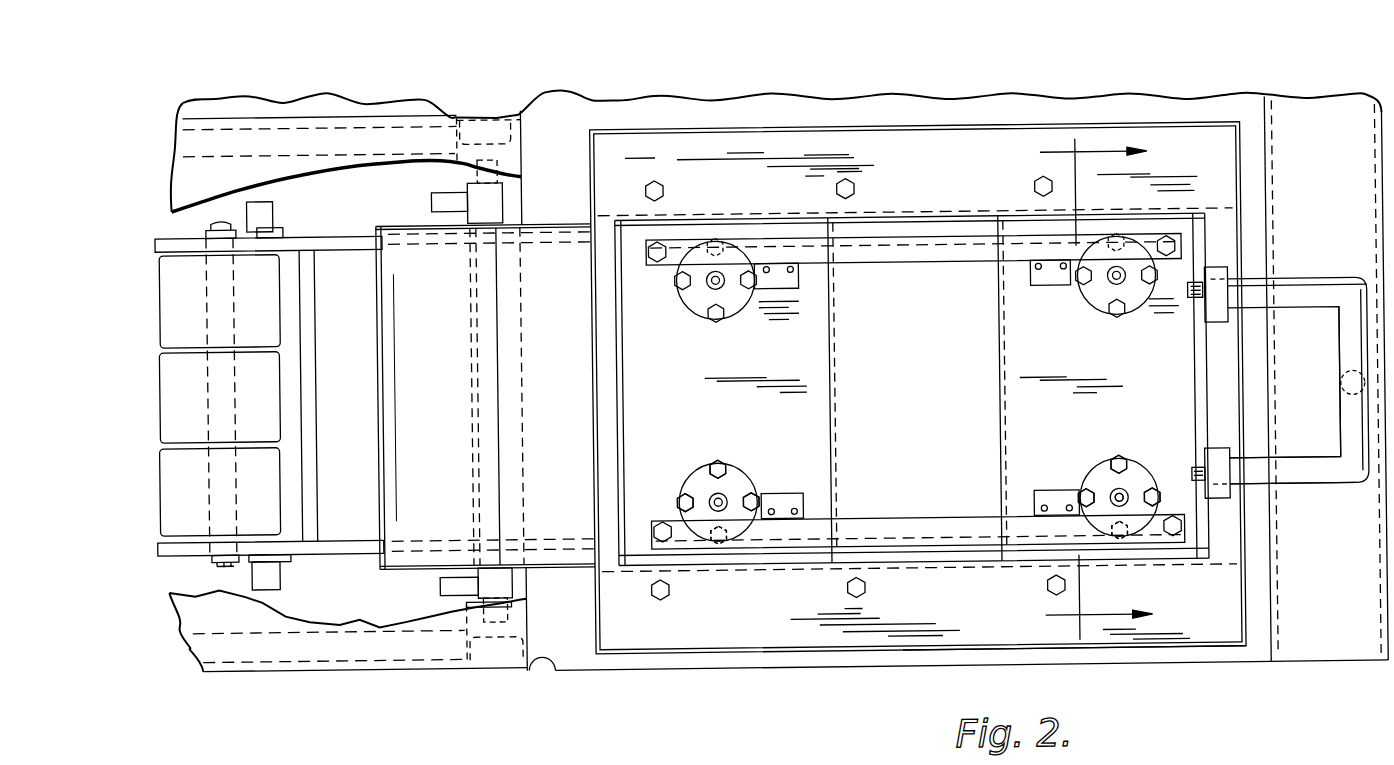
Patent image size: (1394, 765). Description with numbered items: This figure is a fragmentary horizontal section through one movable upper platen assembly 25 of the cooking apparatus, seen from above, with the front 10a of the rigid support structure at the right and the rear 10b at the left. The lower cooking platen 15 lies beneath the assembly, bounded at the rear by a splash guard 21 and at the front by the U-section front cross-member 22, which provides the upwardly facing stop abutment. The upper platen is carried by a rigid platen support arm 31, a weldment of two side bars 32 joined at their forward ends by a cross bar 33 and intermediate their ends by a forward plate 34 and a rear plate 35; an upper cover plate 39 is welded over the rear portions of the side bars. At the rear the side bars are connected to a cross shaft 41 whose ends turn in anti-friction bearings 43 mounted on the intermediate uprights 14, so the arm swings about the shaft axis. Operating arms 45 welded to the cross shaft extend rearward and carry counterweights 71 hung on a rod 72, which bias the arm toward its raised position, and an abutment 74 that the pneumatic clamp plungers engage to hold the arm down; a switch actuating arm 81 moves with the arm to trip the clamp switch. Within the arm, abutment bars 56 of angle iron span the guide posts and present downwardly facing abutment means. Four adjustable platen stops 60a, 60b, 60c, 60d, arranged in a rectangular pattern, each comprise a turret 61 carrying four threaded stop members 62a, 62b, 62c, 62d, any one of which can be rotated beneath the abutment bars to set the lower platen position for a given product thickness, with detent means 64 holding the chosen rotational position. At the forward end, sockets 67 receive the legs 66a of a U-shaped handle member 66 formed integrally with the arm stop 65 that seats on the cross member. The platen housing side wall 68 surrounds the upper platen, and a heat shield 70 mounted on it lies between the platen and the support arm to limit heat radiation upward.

The front 10a is at (1380, 106).
The rear 10b is at (167, 121).
The intermediate uprights 14 is at (526, 127).
The lower cooking platen 15 is at (1017, 96).
The splash guard 21 is at (526, 201).
The front cross-member 22 is at (1326, 636).
The upper platen assembly 25 is at (865, 656).
The platen support arm 31 is at (924, 212).
The side bars 32 is at (778, 557).
The cross bar 33 is at (1196, 385).
The plate 34 is at (1017, 402).
The plate 35 is at (820, 435).
The upper cover plate 39 is at (587, 400).
The cross shaft 41 is at (476, 404).
The anti-friction bearings 43 is at (463, 171).
The operating arms 45 is at (357, 540).
The abutment bars 56 is at (922, 548).
The adjustable platen stop 60a is at (1089, 462).
The adjustable platen stop 60b is at (739, 458).
The adjustable platen stop 60c is at (1088, 310).
The adjustable platen stop 60d is at (737, 320).
The turret 61 is at (1147, 469).
The adjustable stop member 62a is at (712, 536).
The adjustable stop member 62b is at (687, 496).
The adjustable stop member 62c is at (717, 462).
The adjustable stop member 62d is at (750, 494).
The detent means 64 is at (1034, 518).
The arm stop 65 is at (1345, 412).
The handle member 66 is at (1356, 455).
The legs 66a is at (1313, 467).
The sockets 67 is at (1226, 454).
The side wall 68 is at (945, 652).
The heat shield 70 is at (897, 374).
The counterweights 71 is at (270, 490).
The rod 72 is at (236, 467).
The abutment 74 is at (268, 572).
The switch actuating arm 81 is at (442, 587).